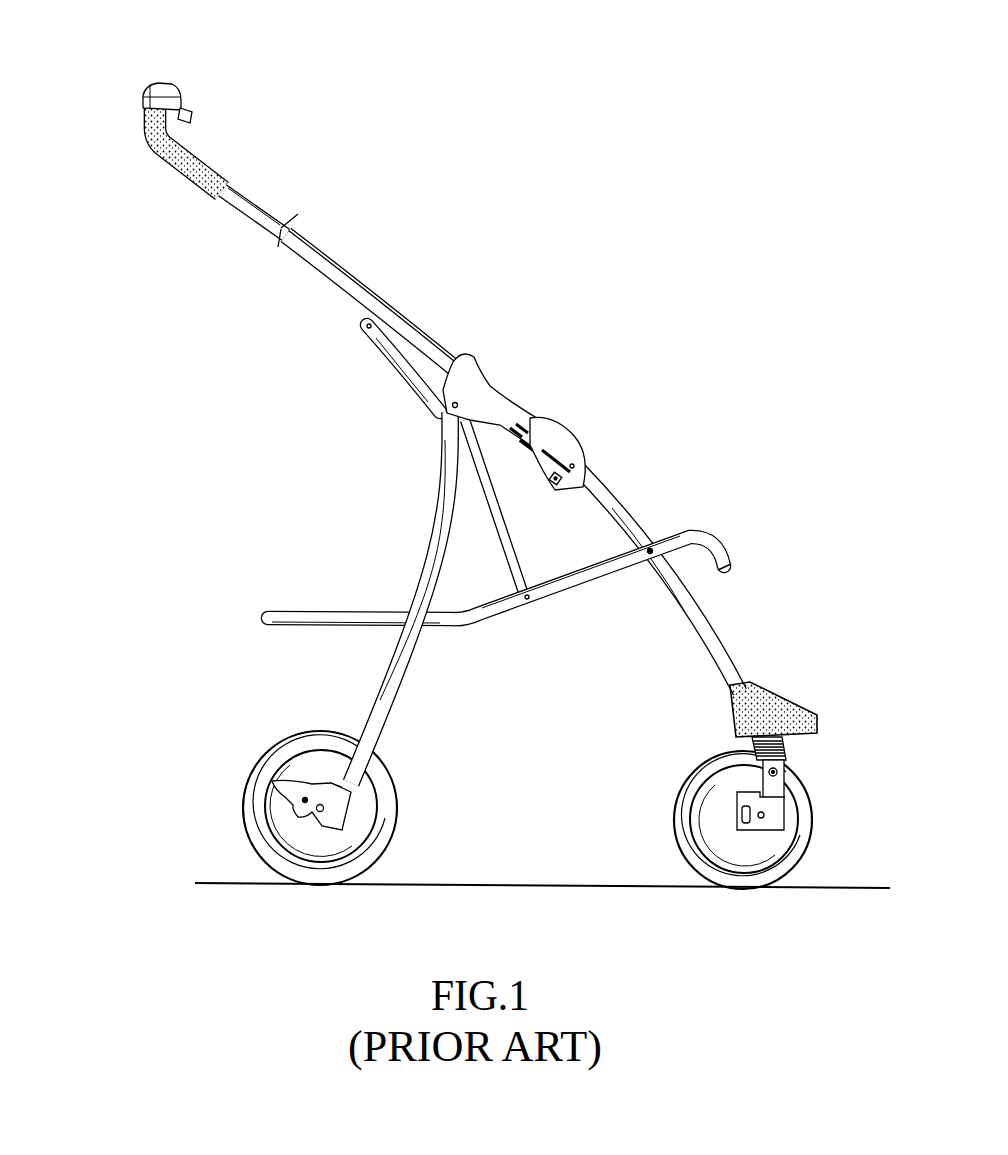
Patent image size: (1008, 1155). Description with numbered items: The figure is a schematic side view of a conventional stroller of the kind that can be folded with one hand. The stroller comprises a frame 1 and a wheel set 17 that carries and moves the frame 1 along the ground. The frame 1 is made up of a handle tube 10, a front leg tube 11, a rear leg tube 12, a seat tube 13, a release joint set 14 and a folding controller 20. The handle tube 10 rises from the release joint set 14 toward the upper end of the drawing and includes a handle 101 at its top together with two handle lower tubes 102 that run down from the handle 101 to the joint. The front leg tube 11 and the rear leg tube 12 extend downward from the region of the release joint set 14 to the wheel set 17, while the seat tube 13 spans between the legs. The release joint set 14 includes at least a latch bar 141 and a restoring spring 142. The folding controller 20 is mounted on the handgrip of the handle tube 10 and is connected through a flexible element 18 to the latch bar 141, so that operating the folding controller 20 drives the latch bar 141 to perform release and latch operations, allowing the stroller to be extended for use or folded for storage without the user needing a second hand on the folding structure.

The frame 1 is at (463, 453).
The handle tube 10 is at (283, 223).
The handle 101 is at (145, 107).
The handle lower tubes 102 is at (302, 255).
The front leg tube 11 is at (713, 643).
The rear leg tube 12 is at (422, 556).
The seat tube 13 is at (707, 533).
The release joint set 14 is at (588, 396).
The latch bar 141 is at (537, 418).
The restoring spring 142 is at (572, 448).
The wheel set 17 is at (815, 779).
The flexible element 18 is at (388, 302).
The folding controller 20 is at (158, 104).